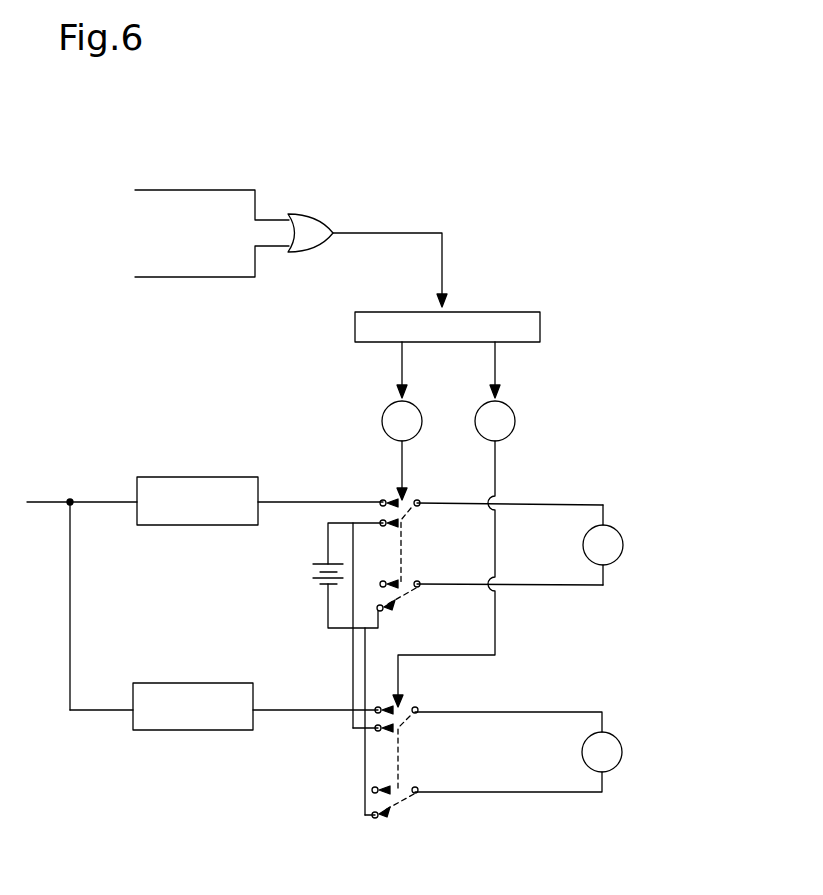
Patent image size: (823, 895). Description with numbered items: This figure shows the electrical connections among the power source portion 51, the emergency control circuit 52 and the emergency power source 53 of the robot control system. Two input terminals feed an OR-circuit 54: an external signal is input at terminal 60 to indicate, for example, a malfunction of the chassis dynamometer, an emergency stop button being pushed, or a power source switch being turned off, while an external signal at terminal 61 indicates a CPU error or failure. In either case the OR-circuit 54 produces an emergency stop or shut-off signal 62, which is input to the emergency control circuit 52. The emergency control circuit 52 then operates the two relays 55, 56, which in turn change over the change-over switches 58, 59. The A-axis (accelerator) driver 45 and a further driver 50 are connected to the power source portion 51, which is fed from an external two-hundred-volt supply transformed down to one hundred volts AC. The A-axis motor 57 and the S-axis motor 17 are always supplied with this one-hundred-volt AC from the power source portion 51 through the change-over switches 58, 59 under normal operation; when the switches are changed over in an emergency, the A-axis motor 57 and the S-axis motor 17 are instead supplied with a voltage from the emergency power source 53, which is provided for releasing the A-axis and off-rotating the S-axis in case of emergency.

The S-axis motor 17 is at (622, 748).
The A-axis (accelerator) driver 45 is at (192, 477).
The driver 50 is at (195, 730).
The power source portion 51 is at (45, 500).
The emergency control circuit 52 is at (540, 327).
The emergency power source 53 is at (312, 582).
The OR-circuit 54 is at (305, 213).
The relay 55 is at (382, 422).
The relay 56 is at (515, 421).
The A-axis motor 57 is at (623, 543).
The change-over switch 58 is at (420, 521).
The change-over switch 59 is at (420, 728).
The terminal 60 is at (193, 196).
The terminal 61 is at (193, 270).
The emergency stop signal 62 is at (442, 265).